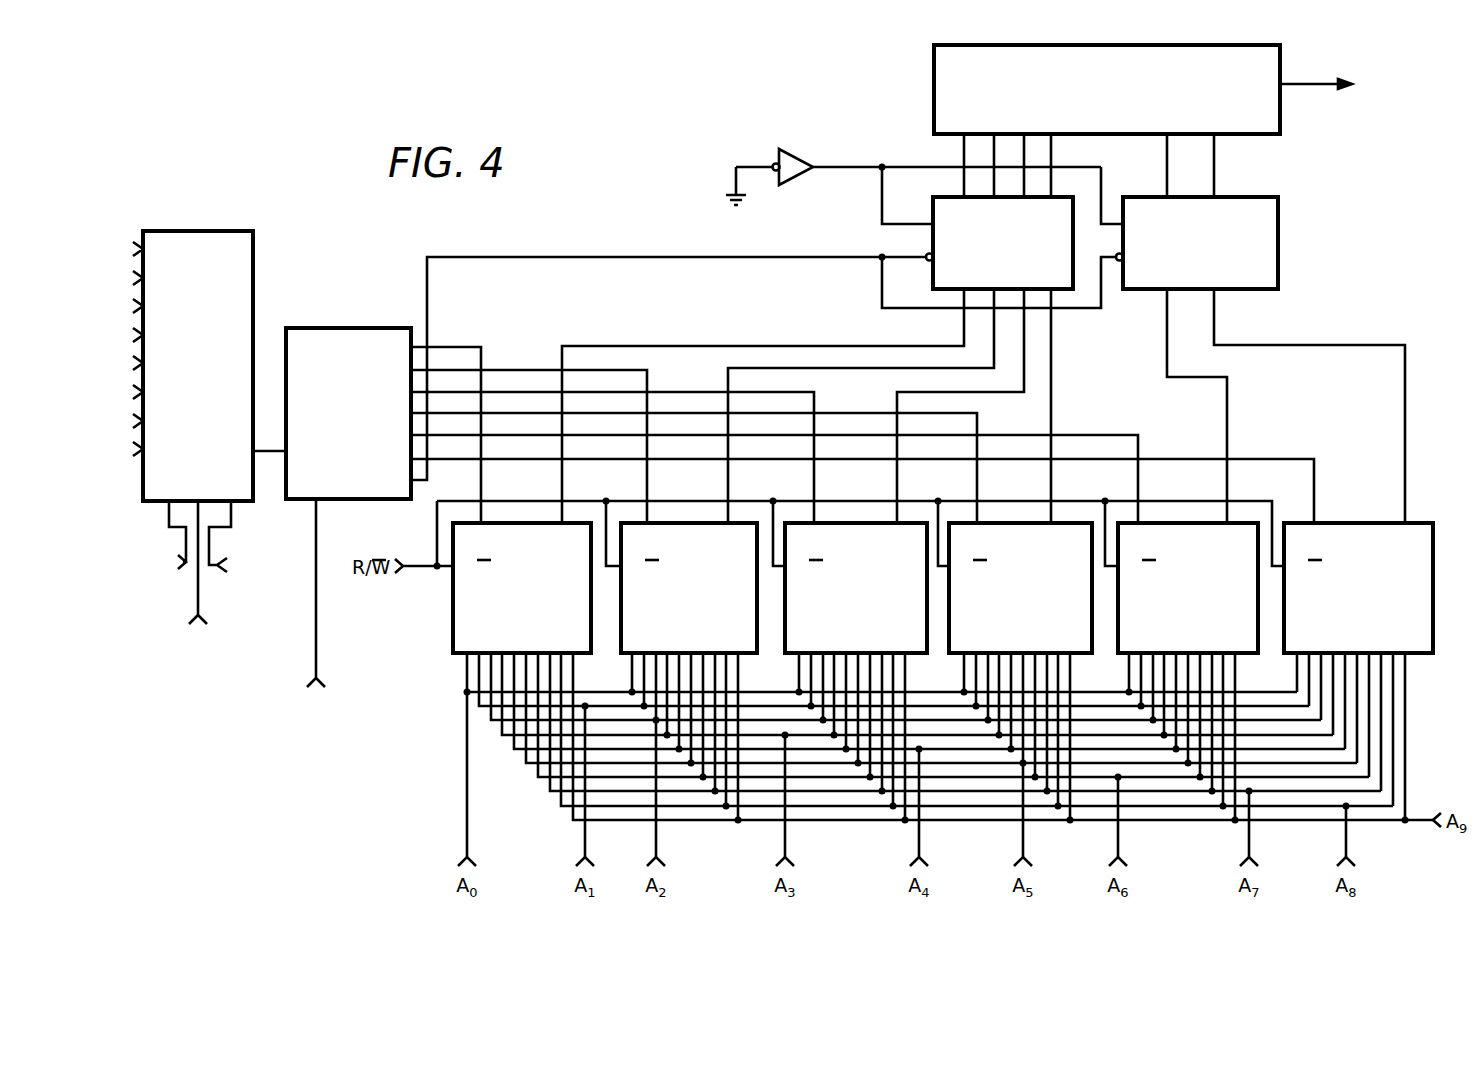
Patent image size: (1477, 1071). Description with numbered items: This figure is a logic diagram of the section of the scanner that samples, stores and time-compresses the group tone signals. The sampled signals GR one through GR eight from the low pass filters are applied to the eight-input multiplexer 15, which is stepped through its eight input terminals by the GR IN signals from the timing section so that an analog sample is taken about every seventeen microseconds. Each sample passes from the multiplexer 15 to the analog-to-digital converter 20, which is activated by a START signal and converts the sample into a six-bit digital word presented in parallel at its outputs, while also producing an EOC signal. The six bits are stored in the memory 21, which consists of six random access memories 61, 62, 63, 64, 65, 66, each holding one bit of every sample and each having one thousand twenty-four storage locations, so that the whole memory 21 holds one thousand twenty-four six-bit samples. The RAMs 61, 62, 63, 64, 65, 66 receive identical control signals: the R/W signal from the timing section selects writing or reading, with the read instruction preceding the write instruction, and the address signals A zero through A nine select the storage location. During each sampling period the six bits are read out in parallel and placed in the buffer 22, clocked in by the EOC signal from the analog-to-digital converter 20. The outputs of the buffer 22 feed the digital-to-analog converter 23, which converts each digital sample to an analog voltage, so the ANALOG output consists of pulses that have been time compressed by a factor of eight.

The eight-input multiplexer 15 is at (253, 254).
The analog-to-digital converter 20 is at (312, 328).
The memory 21 is at (681, 392).
The buffer 22 is at (1298, 230).
The digital-to-analog converter 23 is at (934, 70).
The random access memory 61 is at (453, 621).
The random access memory 62 is at (621, 653).
The random access memory 63 is at (785, 653).
The random access memory 64 is at (949, 653).
The random access memory 65 is at (1118, 653).
The random access memory 66 is at (1284, 653).